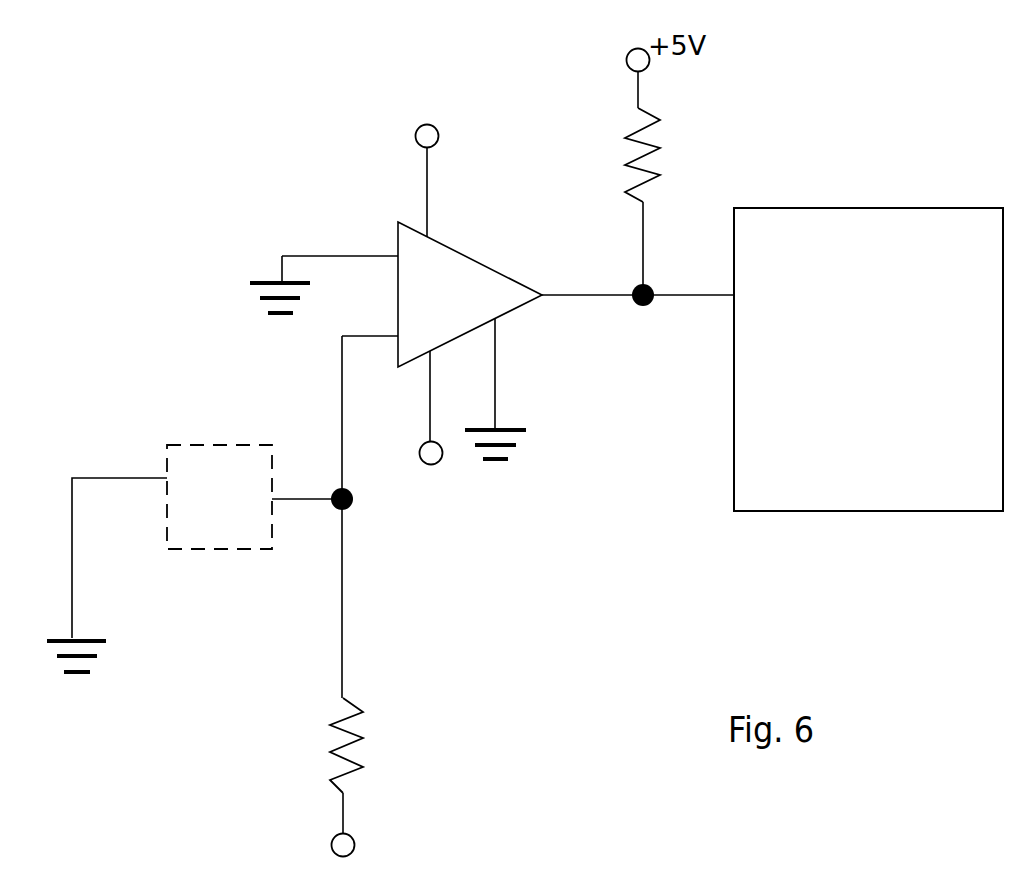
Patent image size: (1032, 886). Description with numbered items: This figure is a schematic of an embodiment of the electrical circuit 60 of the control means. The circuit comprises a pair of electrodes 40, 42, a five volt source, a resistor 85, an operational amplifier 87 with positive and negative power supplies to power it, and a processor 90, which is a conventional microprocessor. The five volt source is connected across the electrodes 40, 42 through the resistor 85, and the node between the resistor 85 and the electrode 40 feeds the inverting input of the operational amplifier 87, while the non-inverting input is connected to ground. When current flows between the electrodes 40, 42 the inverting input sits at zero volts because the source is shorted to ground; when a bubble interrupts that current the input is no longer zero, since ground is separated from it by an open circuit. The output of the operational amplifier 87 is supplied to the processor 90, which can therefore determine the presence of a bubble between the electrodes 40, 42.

The sensing circuit 60 is at (780, 58).
The operational amplifier 87 is at (447, 276).
The processor 90 is at (912, 240).
The electrode 40 is at (298, 498).
The electrode 42 is at (116, 478).
The resistor 85 is at (355, 732).